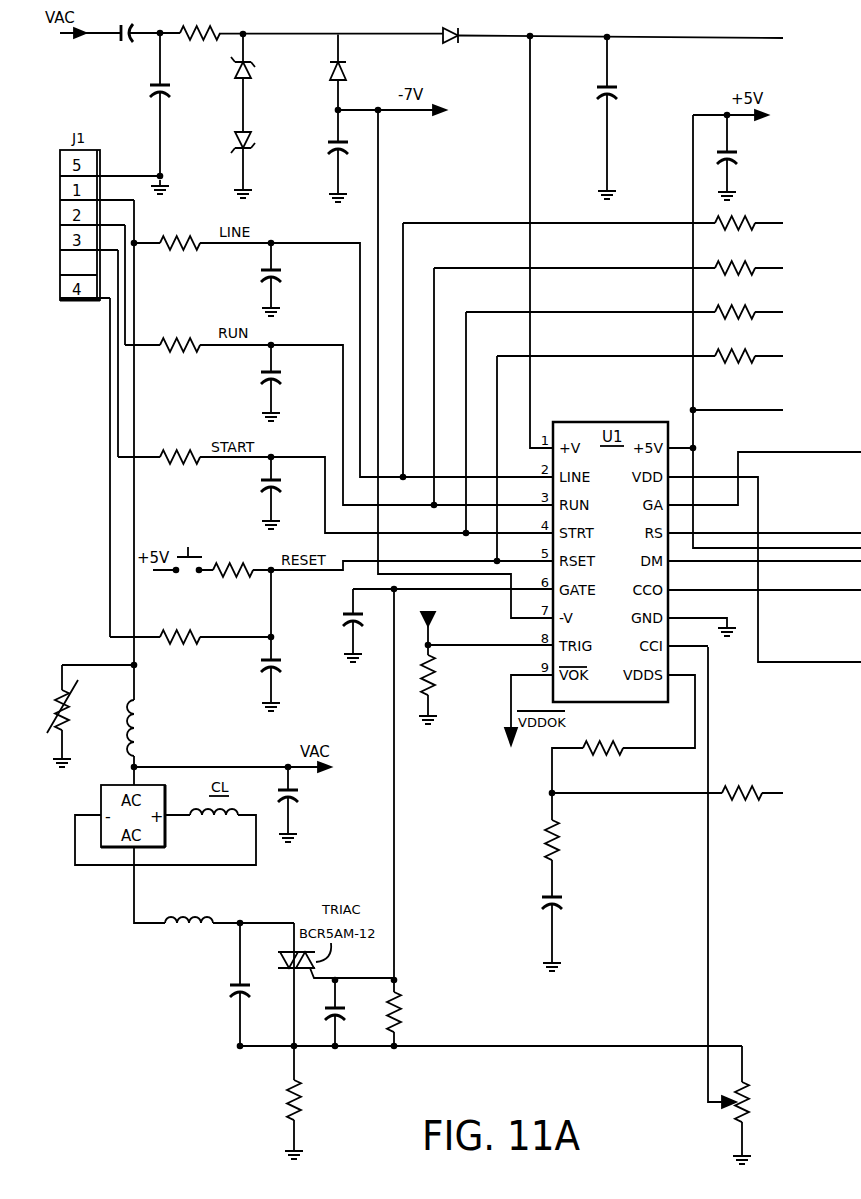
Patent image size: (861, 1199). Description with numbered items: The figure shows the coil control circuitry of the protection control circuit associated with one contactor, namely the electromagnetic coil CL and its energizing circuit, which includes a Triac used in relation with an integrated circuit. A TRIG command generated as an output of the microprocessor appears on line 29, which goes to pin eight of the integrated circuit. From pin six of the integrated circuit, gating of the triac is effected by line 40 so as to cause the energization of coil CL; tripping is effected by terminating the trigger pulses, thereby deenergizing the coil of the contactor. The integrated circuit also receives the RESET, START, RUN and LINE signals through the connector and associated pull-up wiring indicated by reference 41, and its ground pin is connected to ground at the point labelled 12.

The control signal lines 41 is at (583, 222).
The gating line 40 is at (438, 591).
The TRIG command line 29 is at (485, 642).
The ground connection 12 is at (702, 618).